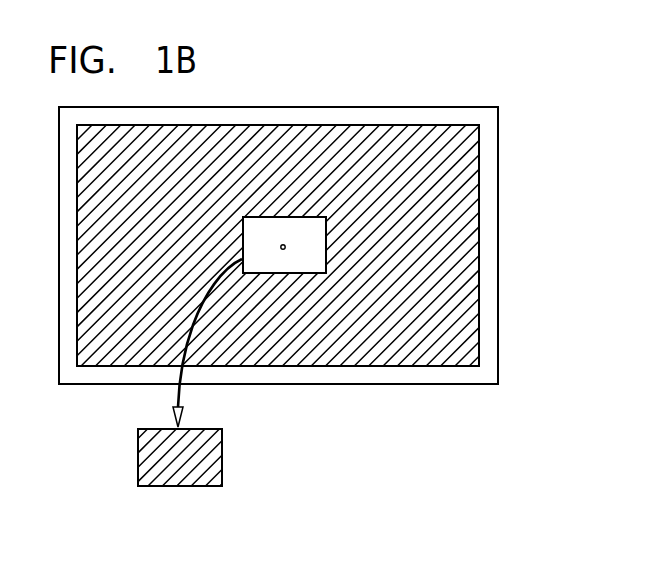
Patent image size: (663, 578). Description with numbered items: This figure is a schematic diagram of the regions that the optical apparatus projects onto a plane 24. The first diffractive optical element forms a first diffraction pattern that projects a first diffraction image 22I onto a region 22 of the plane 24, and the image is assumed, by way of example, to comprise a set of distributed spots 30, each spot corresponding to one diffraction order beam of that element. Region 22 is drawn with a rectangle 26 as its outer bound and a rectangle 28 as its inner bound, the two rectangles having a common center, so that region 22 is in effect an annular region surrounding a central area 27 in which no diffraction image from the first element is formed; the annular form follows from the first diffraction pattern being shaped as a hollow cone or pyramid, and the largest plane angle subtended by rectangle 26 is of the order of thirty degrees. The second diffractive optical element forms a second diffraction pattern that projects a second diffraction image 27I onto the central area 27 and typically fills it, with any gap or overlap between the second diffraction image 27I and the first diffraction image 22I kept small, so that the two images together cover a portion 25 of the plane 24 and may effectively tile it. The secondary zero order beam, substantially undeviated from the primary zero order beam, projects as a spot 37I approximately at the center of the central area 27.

The distributed spots 30 is at (502, 123).
The first diffraction image 22I is at (463, 175).
The region 22 is at (467, 221).
The rectangle 26 is at (480, 265).
The plane 24 is at (500, 349).
The portion 25 is at (89, 367).
The spot 37I is at (284, 247).
The central area 27 is at (303, 260).
The rectangle 28 is at (327, 258).
The second diffraction image 27I is at (163, 473).